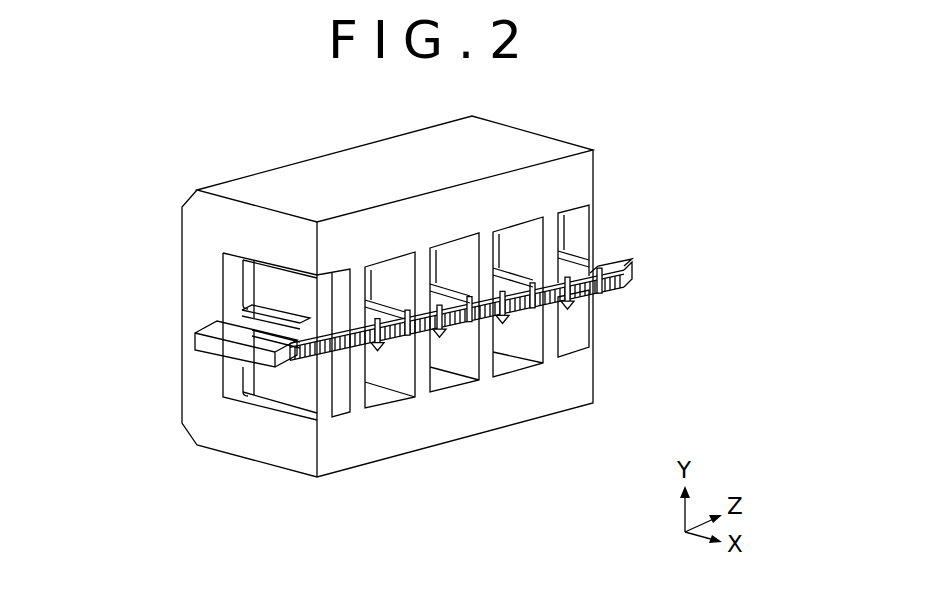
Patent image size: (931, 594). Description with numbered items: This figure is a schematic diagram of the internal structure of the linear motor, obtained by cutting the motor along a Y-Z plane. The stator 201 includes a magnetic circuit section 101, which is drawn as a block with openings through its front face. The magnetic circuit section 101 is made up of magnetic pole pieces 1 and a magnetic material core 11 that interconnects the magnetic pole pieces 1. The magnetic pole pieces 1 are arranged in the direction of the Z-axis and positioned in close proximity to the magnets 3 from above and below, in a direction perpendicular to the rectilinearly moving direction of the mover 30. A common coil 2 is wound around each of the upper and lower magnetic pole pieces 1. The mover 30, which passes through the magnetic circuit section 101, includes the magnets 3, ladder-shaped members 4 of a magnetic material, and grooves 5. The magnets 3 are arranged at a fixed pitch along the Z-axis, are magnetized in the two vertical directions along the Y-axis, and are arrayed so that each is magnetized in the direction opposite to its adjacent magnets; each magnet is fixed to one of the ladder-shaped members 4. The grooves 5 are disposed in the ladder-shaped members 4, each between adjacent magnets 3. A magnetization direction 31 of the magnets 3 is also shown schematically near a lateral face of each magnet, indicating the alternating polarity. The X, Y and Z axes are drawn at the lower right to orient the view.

The magnetic pole piece 1 is at (425, 288).
The coil 2 is at (280, 308).
The magnet 3 is at (252, 332).
The ladder-shaped member of a magnetic material 4 is at (195, 338).
The groove 5 is at (238, 328).
The magnetic material core 11 is at (568, 383).
The mover 30 is at (338, 320).
The magnetization direction 31 is at (598, 272).
The magnetic circuit section 101 is at (419, 314).
The stator 201 is at (372, 340).